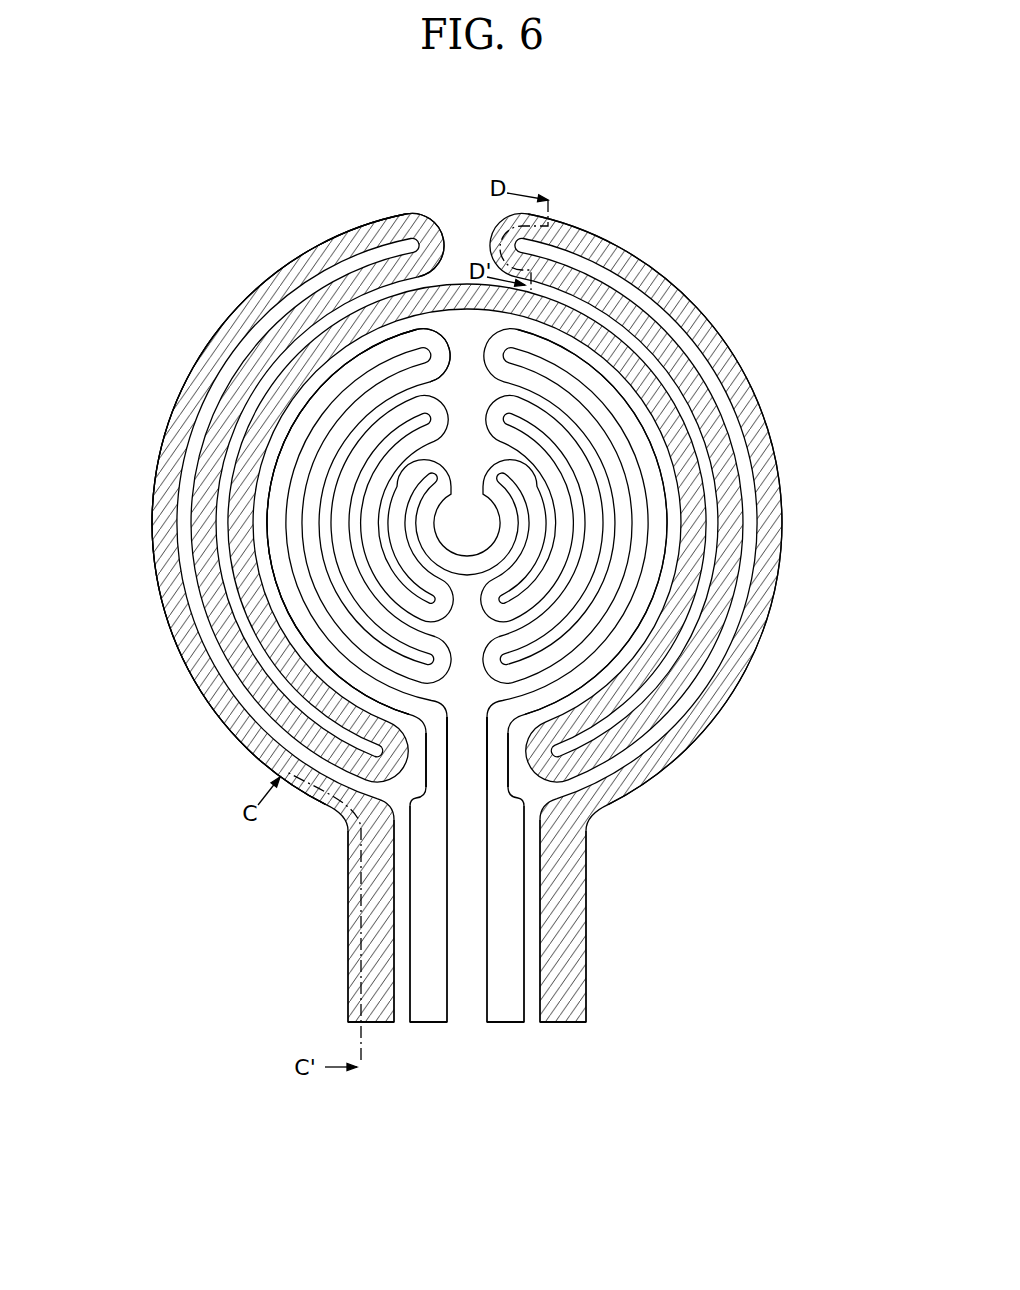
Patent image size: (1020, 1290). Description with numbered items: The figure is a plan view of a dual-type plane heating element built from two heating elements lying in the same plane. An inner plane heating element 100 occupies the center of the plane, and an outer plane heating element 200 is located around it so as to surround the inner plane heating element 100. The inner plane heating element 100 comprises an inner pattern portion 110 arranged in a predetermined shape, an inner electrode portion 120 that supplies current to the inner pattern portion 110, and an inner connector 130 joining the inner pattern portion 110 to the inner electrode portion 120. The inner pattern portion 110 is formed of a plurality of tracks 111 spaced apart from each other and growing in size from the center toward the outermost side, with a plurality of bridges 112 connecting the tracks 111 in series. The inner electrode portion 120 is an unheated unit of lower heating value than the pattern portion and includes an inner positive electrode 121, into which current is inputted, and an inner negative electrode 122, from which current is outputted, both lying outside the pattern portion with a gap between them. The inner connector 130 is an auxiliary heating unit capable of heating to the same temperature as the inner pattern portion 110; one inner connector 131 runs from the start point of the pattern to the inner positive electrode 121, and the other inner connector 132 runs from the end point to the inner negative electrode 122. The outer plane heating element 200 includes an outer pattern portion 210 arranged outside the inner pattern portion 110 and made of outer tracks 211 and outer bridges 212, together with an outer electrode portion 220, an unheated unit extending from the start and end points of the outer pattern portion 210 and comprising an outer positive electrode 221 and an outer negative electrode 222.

The inner plane heating element 100 is at (617, 383).
The inner pattern portion 110 is at (123, 262).
The tracks 111 is at (333, 386).
The bridges 112 is at (430, 336).
The inner electrode portion 120 is at (662, 913).
The inner positive electrode 121 is at (432, 928).
The inner negative electrode 122 is at (507, 980).
The inner connector 130 is at (722, 775).
The inner connector 131 is at (443, 773).
The inner connector 132 is at (493, 752).
The outer plane heating element 200 is at (758, 392).
The outer pattern portion 210 is at (438, 120).
The outer tracks 211 is at (355, 232).
The outer bridges 212 is at (430, 232).
The outer electrode portion 220 is at (585, 1130).
The outer positive electrode 221 is at (375, 1024).
The outer negative electrode 222 is at (563, 1024).